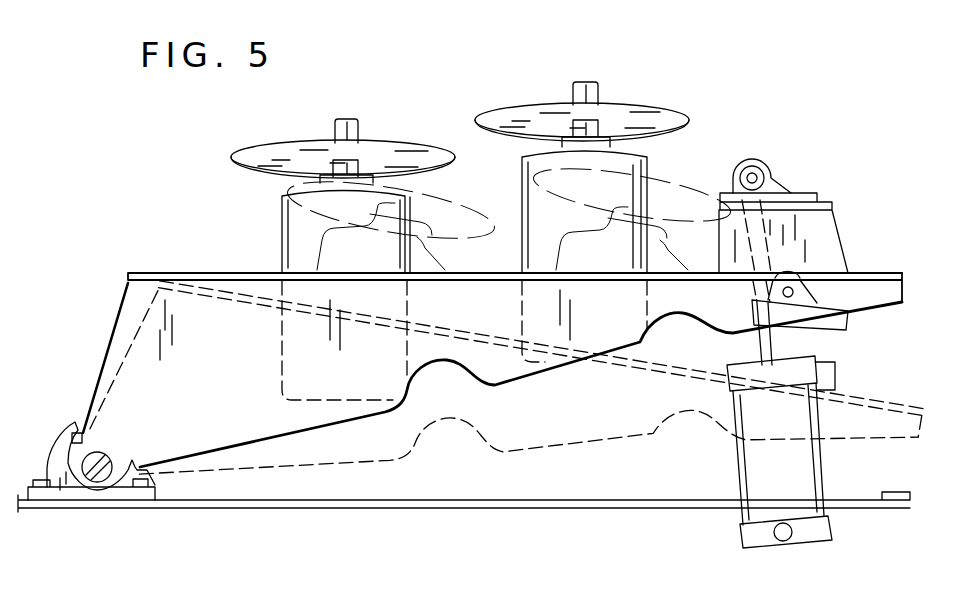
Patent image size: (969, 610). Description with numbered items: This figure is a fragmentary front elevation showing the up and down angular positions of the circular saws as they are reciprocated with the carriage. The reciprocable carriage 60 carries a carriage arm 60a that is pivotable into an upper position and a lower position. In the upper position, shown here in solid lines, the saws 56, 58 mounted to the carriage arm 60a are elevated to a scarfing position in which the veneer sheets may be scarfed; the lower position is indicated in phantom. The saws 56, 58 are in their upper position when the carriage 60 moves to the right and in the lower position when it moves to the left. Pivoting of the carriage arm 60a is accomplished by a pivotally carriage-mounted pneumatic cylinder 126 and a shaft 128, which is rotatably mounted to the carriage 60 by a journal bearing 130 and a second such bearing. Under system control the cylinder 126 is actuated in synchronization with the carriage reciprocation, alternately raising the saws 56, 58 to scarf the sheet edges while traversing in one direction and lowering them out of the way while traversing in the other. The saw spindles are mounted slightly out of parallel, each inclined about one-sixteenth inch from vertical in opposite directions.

The saw 56 is at (397, 136).
The saw 58 is at (641, 96).
The reciprocable carriage 60 is at (116, 323).
The carriage arm 60a is at (230, 369).
The pneumatic cylinder 126 is at (758, 468).
The shaft 128 is at (104, 457).
The journal bearing 130 is at (52, 455).